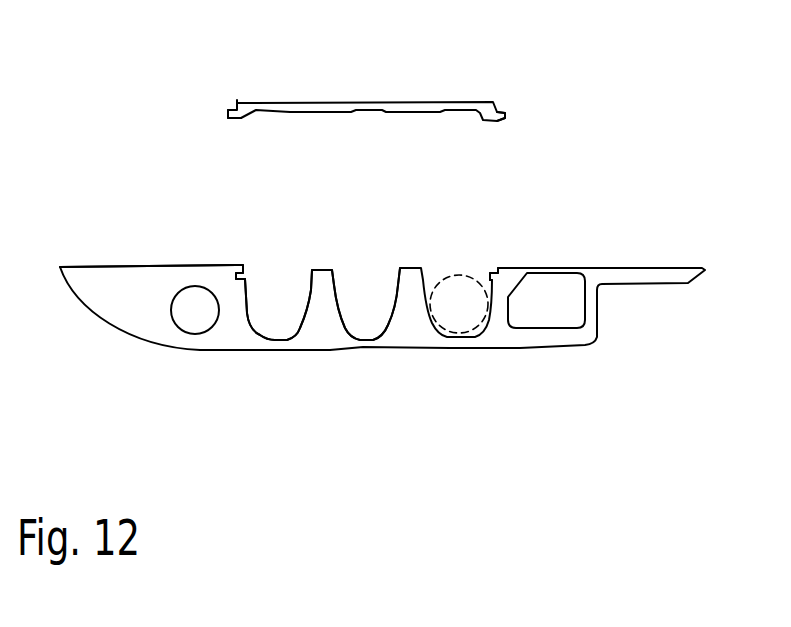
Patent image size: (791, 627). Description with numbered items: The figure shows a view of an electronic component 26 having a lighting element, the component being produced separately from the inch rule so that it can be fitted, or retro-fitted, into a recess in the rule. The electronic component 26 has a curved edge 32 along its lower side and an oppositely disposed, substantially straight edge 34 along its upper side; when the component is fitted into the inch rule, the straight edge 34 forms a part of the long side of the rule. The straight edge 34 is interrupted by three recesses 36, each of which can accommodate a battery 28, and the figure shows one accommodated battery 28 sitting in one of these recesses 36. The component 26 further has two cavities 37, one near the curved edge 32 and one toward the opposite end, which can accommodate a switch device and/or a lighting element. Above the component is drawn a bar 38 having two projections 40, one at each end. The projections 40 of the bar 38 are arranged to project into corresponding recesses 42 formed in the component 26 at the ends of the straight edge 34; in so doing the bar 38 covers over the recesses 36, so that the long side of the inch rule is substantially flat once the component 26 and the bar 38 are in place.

The electronic component 26 is at (135, 285).
The battery 28 is at (463, 313).
The curved edge 32 is at (192, 350).
The straight edge 34 is at (198, 263).
The recess 36 is at (273, 302).
The cavity 37 is at (202, 318).
The bar 38 is at (325, 105).
The projection 40 is at (230, 112).
The recess 42 is at (240, 265).